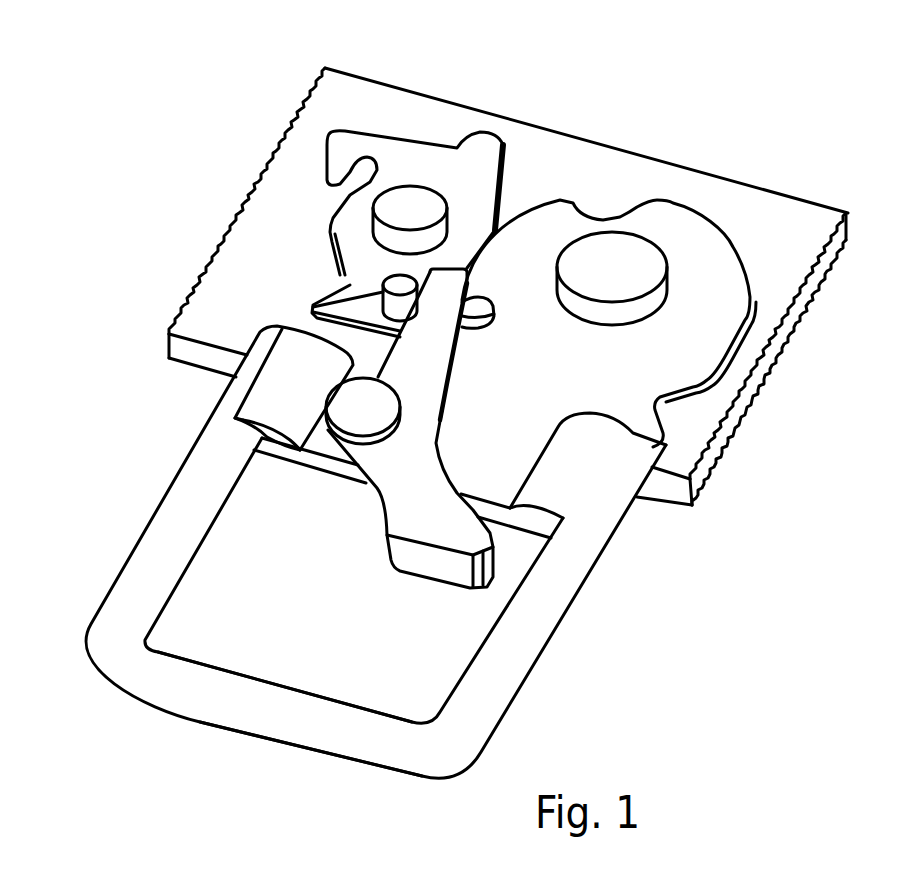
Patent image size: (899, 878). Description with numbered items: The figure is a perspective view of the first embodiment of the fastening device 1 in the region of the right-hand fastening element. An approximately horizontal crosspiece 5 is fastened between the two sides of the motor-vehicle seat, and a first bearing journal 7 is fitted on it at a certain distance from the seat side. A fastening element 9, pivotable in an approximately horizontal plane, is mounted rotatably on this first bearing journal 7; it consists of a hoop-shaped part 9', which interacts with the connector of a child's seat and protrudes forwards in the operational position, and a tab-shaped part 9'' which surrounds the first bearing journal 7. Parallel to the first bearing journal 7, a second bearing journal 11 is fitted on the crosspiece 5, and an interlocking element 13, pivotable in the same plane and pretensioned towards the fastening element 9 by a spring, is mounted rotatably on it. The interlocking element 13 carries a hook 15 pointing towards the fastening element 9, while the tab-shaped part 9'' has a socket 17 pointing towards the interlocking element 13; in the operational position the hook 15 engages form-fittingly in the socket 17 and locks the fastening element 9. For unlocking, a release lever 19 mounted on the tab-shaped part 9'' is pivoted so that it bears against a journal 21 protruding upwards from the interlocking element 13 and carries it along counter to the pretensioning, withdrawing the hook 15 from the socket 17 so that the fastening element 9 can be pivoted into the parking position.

The fastening device 1 is at (213, 173).
The crosspiece 5 is at (593, 182).
The first bearing journal 7 is at (610, 270).
The fastening element 9 is at (339, 552).
The hoop-shaped part 9' is at (400, 714).
The tab-shaped part 9'' is at (673, 430).
The second bearing journal 11 is at (408, 216).
The interlocking element 13 is at (467, 218).
The hook 15 is at (473, 308).
The socket 17 is at (480, 300).
The release lever 19 is at (405, 497).
The journal 21 is at (398, 287).